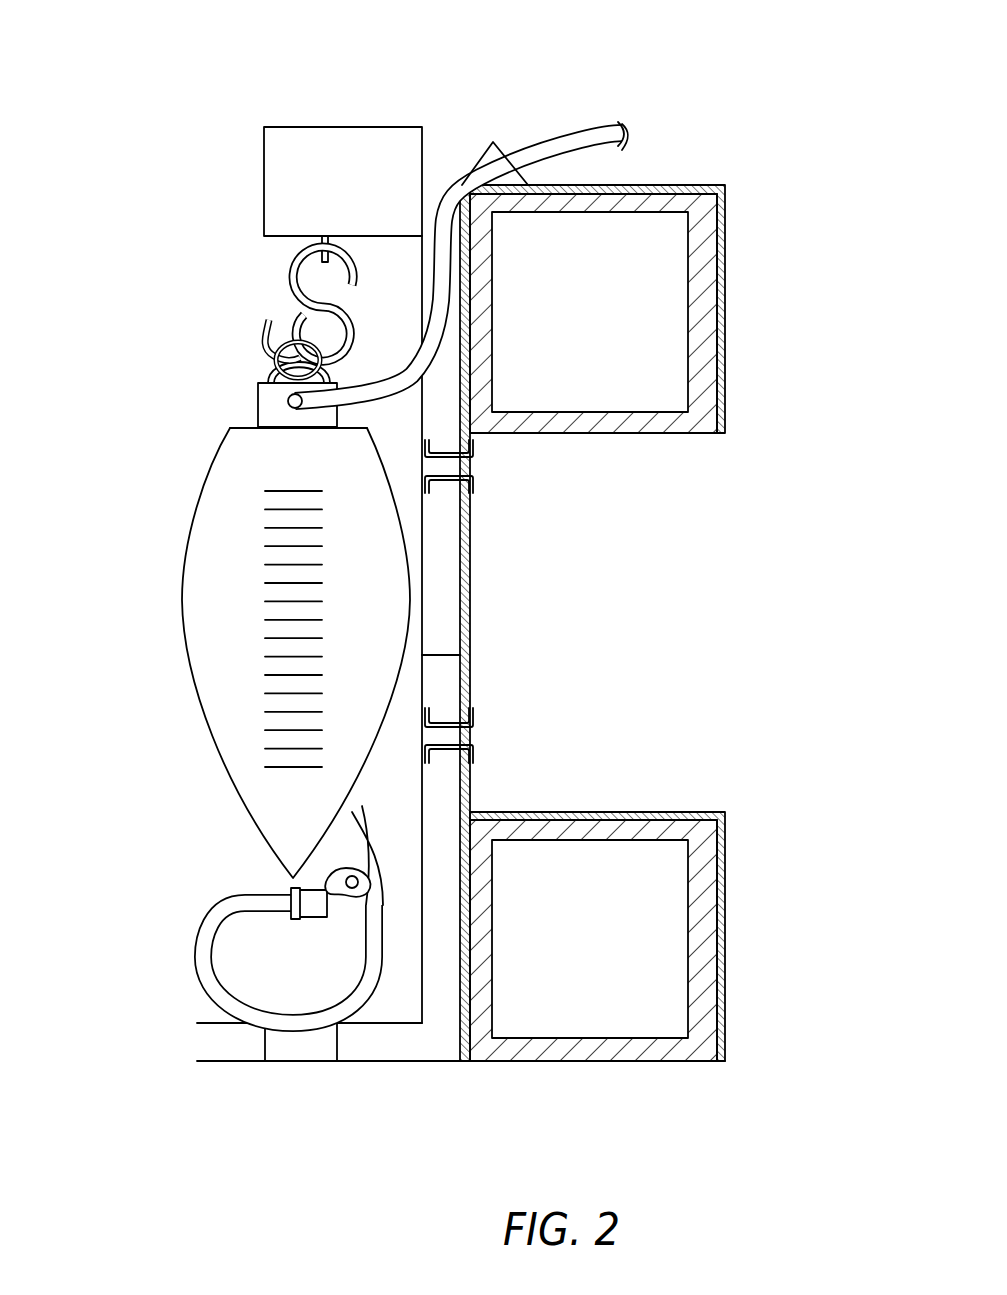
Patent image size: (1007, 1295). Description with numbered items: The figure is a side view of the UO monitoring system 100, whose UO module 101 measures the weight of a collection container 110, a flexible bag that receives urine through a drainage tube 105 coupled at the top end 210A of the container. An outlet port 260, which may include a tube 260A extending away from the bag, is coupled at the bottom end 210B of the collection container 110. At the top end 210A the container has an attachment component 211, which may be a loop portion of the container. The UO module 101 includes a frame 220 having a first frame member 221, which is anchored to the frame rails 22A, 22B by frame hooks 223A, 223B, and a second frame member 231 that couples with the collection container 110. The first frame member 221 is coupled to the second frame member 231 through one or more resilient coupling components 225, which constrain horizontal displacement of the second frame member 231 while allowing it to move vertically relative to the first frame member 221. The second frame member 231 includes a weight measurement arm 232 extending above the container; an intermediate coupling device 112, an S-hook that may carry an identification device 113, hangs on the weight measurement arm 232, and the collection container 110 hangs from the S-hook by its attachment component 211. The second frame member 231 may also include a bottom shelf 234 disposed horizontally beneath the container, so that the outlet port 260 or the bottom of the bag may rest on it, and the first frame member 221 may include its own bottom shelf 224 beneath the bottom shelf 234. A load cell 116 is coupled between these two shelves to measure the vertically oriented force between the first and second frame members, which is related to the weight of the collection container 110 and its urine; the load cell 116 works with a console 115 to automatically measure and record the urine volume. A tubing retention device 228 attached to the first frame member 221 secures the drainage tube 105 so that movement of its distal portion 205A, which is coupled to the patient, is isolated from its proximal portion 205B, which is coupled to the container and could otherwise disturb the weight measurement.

The UO monitoring system 100 is at (728, 153).
The UO module 101 is at (720, 475).
The drainage tube 105 is at (586, 131).
The collection container 110 is at (183, 663).
The intermediate coupling device 112 is at (285, 305).
The identification device 113 is at (343, 317).
The console 115 is at (303, 153).
The load cell 116 is at (298, 1061).
The distal portion 205A is at (612, 123).
The proximal portion 205B is at (408, 338).
The top end 210A is at (237, 422).
The bottom end 210B is at (235, 872).
The attachment component 211 is at (250, 400).
The frame 220 is at (473, 593).
The first frame member 221 is at (460, 507).
The frame hook 223A is at (725, 300).
The frame hook 223B is at (725, 935).
The bottom shelf 224 is at (380, 1061).
The resilient coupling components 225 is at (473, 735).
The tubing retention device 228 is at (510, 146).
The second frame member 231 is at (460, 655).
The weight measurement arm 232 is at (285, 258).
The bottom shelf 234 is at (213, 1023).
The outlet port 260 is at (203, 905).
The tube 260A is at (330, 893).
The frame rail 22A is at (652, 443).
The frame rail 22B is at (660, 862).